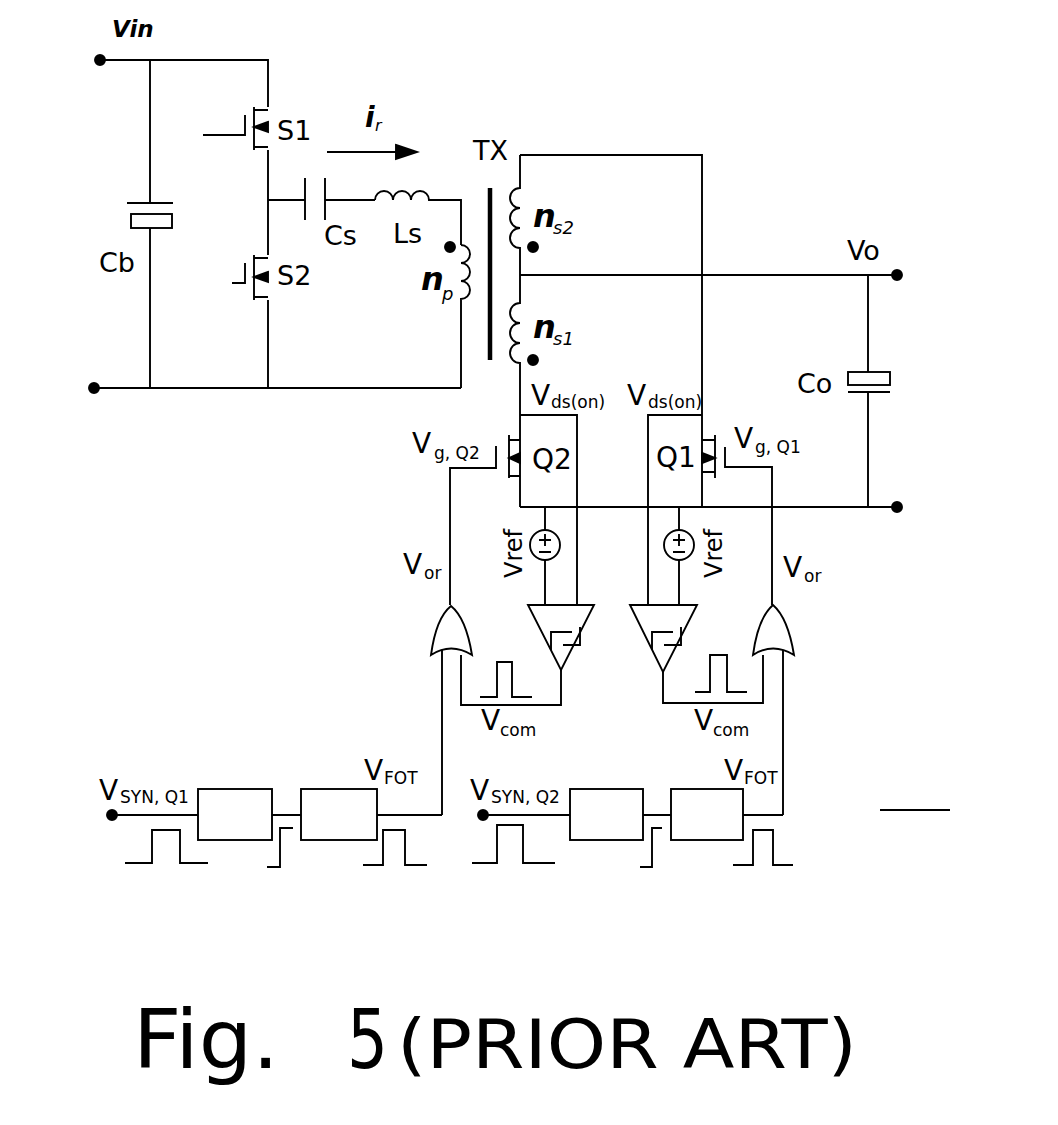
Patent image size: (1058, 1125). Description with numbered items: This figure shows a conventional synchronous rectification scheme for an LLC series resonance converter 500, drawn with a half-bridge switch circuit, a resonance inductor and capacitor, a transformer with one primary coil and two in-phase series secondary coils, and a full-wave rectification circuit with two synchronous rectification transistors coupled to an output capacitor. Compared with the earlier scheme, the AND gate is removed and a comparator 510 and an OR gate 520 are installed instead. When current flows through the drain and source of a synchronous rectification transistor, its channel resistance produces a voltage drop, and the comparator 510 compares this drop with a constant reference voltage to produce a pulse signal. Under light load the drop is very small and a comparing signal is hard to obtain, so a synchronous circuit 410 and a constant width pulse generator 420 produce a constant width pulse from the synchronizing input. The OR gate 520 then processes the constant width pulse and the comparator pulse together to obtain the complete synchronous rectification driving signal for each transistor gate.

The synchronous circuit 410 is at (228, 789).
The constant width pulse generator 420 is at (330, 789).
The LLC series resonance converter 500 is at (915, 788).
The comparator 510 is at (645, 652).
The OR gate 520 is at (433, 640).